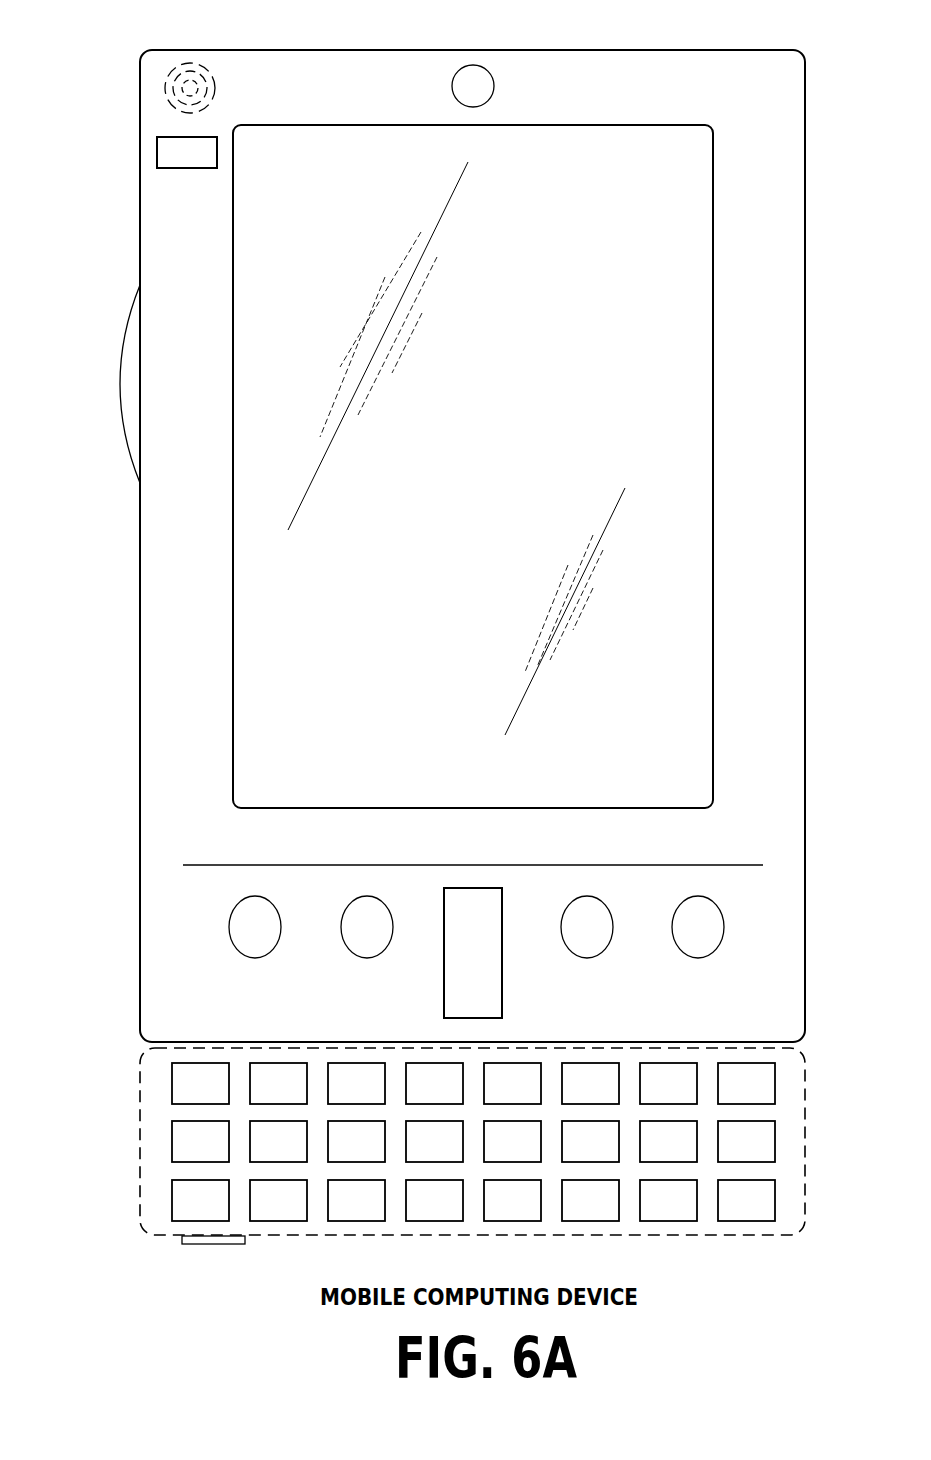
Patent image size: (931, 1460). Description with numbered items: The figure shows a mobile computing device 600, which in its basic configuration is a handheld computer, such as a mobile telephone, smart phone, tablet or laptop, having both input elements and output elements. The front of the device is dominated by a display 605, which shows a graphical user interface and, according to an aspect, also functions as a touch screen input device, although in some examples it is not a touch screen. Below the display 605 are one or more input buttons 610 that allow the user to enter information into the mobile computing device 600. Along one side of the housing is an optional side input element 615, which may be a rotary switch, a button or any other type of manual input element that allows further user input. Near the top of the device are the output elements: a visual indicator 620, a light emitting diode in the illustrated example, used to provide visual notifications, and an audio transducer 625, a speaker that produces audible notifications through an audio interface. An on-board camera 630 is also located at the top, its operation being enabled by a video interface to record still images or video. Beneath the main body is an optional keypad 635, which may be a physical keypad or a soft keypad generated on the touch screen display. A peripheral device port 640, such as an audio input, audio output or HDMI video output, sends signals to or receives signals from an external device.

The mobile computing device 600 is at (773, 50).
The display 605 is at (256, 643).
The input buttons 610 is at (254, 958).
The side input element 615 is at (118, 385).
The visual indicator 620 is at (157, 155).
The audio transducer 625 is at (150, 88).
The on-board camera 630 is at (473, 65).
The keypad 635 is at (152, 1140).
The peripheral device port 640 is at (190, 1245).